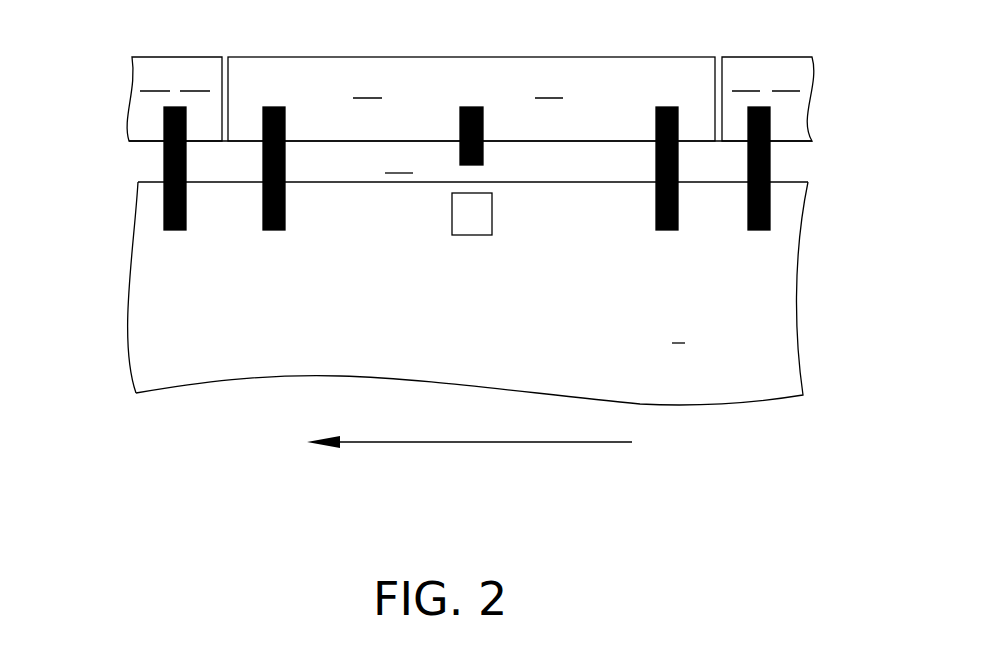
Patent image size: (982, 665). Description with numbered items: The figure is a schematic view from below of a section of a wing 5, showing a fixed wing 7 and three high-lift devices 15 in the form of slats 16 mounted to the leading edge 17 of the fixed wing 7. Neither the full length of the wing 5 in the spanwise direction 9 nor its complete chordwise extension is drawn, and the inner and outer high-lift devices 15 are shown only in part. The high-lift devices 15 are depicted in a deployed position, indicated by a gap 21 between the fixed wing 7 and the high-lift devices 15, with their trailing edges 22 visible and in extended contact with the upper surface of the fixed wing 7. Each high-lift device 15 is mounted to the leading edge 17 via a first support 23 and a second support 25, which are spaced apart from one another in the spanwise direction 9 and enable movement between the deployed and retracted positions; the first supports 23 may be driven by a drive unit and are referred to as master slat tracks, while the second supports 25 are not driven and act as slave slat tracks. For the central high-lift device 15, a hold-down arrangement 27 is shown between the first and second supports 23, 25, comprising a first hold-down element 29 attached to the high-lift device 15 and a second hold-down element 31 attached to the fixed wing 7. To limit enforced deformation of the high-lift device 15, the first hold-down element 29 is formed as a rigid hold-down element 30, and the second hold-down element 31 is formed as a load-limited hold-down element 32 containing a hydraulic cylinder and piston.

The wing 5 is at (469, 251).
The fixed wing 7 is at (426, 293).
The spanwise direction 9 is at (528, 442).
The high-lift device 15 is at (451, 80).
The slat 16 is at (491, 80).
The leading edge 17 is at (118, 242).
The gap 21 is at (470, 191).
The trailing edge 22 is at (145, 140).
The first support 23 is at (469, 158).
The second support 25 is at (165, 168).
The hold-down arrangement 27 is at (532, 179).
The first hold-down element 29 is at (533, 85).
The rigid hold-down element 30 is at (484, 118).
The second hold-down element 31 is at (545, 238).
The load-limited hold-down element 32 is at (492, 215).